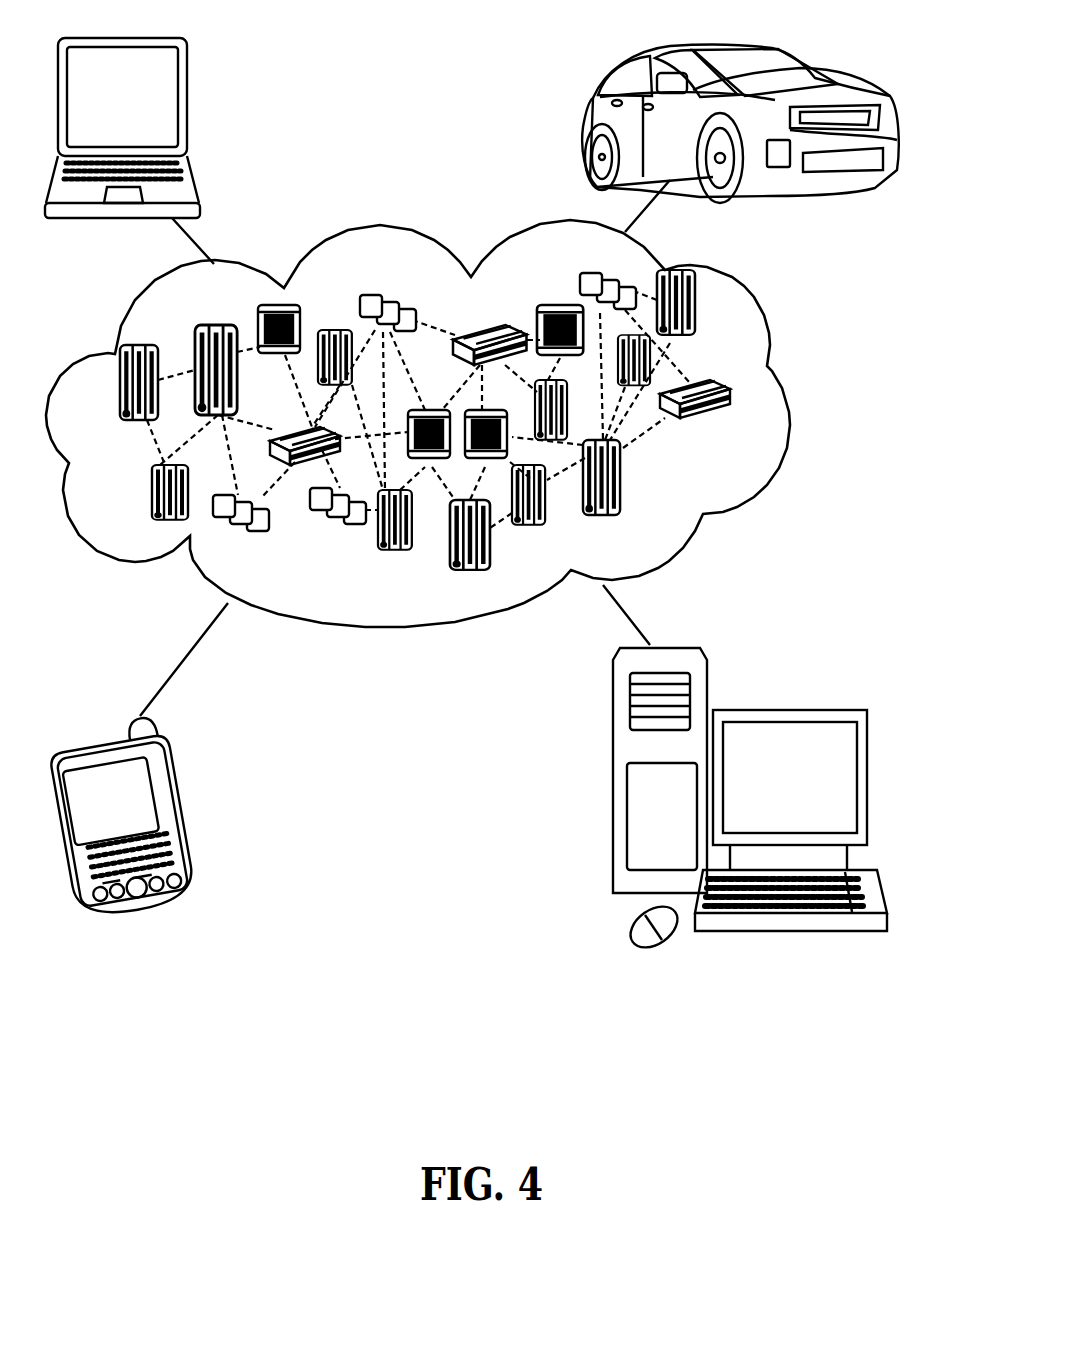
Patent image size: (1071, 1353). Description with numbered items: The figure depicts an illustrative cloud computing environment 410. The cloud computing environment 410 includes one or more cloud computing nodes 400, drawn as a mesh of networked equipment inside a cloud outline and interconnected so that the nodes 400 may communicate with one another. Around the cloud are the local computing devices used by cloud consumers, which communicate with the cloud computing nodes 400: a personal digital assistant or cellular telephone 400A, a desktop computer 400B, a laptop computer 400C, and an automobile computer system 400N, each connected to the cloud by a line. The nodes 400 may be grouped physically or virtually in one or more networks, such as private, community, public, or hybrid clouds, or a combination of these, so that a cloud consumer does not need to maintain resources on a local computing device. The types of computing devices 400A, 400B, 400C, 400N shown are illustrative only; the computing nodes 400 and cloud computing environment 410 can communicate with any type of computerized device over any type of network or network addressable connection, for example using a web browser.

The cloud computing nodes 400 is at (472, 497).
The cloud computing environment 410 is at (790, 404).
The personal digital assistant (PDA) or cellular telephone 400A is at (173, 810).
The desktop computer 400B is at (793, 710).
The laptop computer 400C is at (187, 107).
The automobile computer system 400N is at (590, 126).